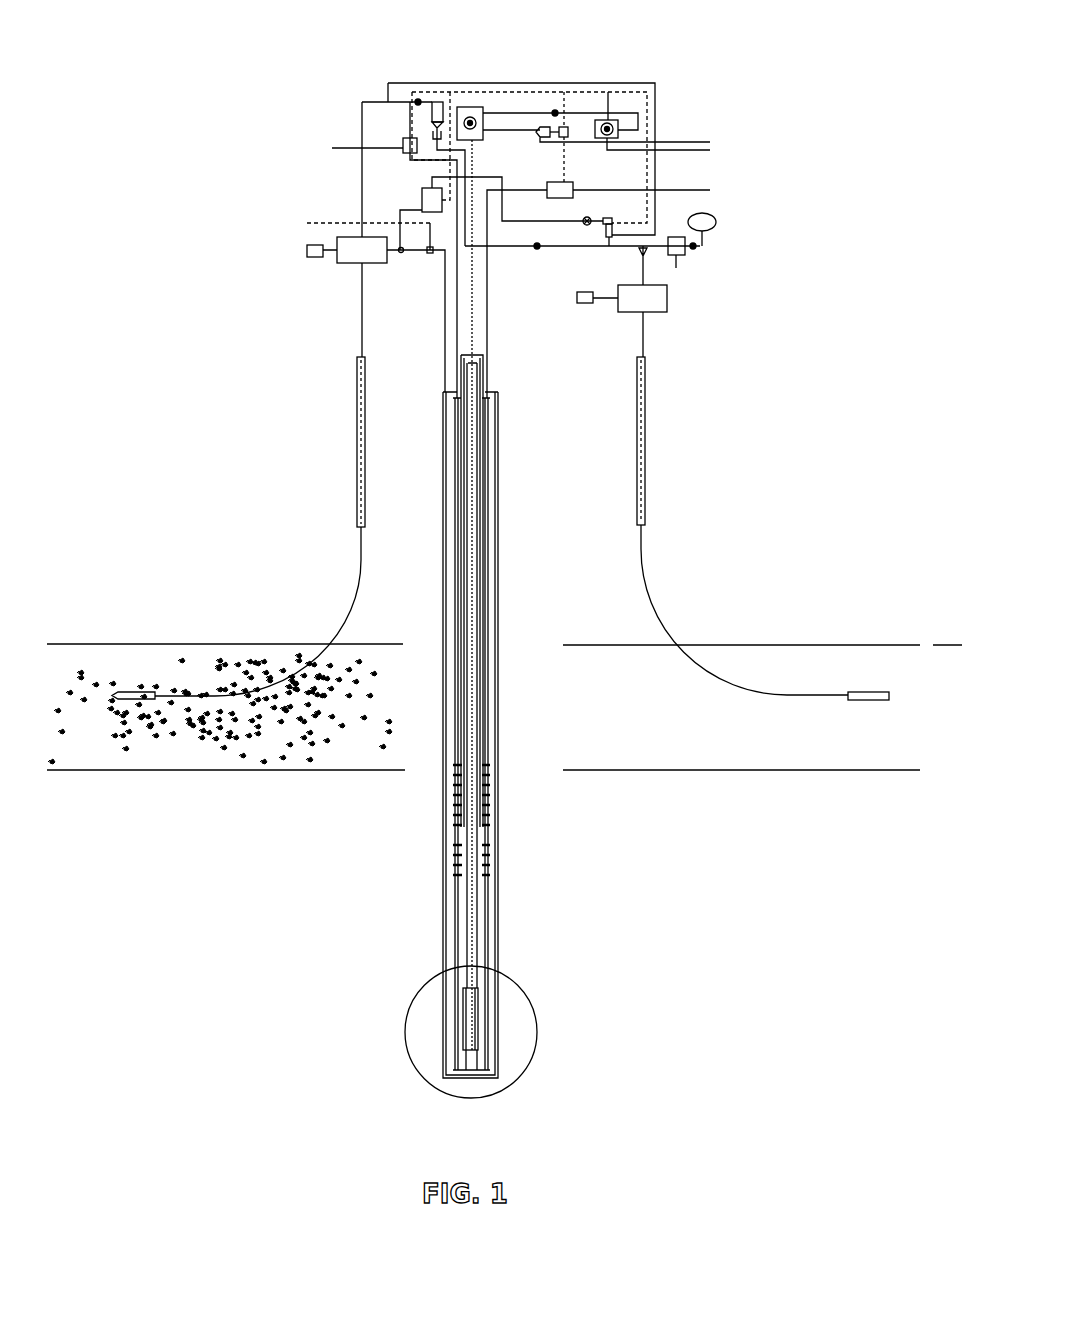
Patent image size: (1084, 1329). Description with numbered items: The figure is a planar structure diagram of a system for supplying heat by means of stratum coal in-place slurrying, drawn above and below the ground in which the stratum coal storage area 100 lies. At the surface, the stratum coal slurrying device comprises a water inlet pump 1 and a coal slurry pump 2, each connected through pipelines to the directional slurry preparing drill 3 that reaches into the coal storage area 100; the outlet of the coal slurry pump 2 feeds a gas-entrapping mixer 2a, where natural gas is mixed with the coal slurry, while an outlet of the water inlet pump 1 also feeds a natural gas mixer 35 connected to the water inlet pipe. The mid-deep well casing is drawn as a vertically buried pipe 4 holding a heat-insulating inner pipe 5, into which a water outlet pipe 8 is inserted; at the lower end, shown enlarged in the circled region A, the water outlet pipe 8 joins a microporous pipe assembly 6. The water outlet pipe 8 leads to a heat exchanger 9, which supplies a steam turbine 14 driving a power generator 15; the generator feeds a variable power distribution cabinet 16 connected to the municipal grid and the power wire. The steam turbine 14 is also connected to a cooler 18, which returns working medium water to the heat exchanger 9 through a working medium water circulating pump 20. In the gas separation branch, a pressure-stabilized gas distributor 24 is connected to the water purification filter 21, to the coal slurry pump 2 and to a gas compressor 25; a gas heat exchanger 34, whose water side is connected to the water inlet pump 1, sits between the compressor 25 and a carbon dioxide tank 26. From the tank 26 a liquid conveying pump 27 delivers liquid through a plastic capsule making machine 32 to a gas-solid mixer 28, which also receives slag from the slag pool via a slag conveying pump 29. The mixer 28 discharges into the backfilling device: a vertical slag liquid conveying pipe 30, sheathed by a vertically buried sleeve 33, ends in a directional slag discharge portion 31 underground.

The water inlet pump 1 is at (418, 102).
The coal slurry pump 2 is at (402, 254).
The gas-entrapping mixer 2a is at (430, 255).
The directional slurry preparing drill 3 is at (137, 697).
The vertically buried pipe 4 is at (492, 852).
The heat-insulating inner pipe 5 is at (490, 810).
The microporous pipe assembly 6 is at (478, 1020).
The water outlet pipe 8 is at (472, 603).
The heat exchanger 9 is at (484, 110).
The steam turbine 14 is at (541, 126).
The power generator 15 is at (563, 127).
The variable power distribution cabinet 16 is at (575, 188).
The cooler 18 is at (615, 125).
The working medium water circulating pump 20 is at (555, 113).
The water purification filter 21 is at (437, 100).
The pressure-stabilized gas distributor 24 is at (422, 198).
The gas compressor 25 is at (586, 226).
The CO2 tank 26 is at (714, 217).
The liquid conveying pump 27 is at (695, 248).
The gas-solid mixer 28 is at (646, 253).
The slag conveying pump 29 is at (537, 246).
The vertical slag liquid conveying pipe 30 is at (643, 483).
The directional slag discharge portion 31 is at (857, 692).
The plastic capsule making machine 32 is at (683, 253).
The vertically buried sleeve 33 is at (643, 398).
The gas heat exchanger 34 is at (611, 248).
The natural gas mixer 35 is at (403, 145).
The stratum coal storage area 100 is at (212, 662).
The enlarged portion A is at (423, 1082).